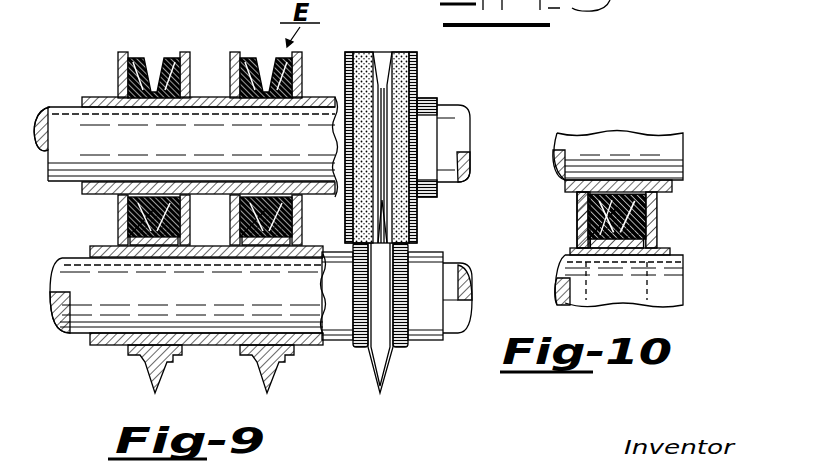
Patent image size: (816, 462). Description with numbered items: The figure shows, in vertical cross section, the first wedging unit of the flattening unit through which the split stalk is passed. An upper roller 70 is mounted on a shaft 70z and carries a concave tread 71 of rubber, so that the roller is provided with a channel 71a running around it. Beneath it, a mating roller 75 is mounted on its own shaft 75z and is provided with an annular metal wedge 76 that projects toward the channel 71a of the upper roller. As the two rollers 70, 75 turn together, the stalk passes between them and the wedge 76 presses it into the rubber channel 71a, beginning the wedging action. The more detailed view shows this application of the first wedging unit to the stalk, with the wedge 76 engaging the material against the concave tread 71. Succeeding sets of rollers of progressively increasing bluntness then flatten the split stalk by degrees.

In FIG. 9, the roller 70 is at (118, 56).
In FIG. 10, the roller 70 is at (575, 198).
In FIG. 9, the shaft 70z is at (459, 137).
In FIG. 10, the shaft 70z is at (672, 155).
In FIG. 9, the concave tread 71 is at (364, 62).
In FIG. 10, the concave tread 71 is at (648, 212).
In FIG. 9, the channel 71a is at (145, 68).
In FIG. 10, the channel 71a is at (656, 227).
In FIG. 9, the roller 75 is at (424, 262).
In FIG. 10, the roller 75 is at (578, 242).
In FIG. 9, the shaft 75z is at (466, 288).
In FIG. 10, the shaft 75z is at (665, 291).
In FIG. 9, the annular metal wedge 76 is at (160, 383).
In FIG. 10, the annular metal wedge 76 is at (578, 228).